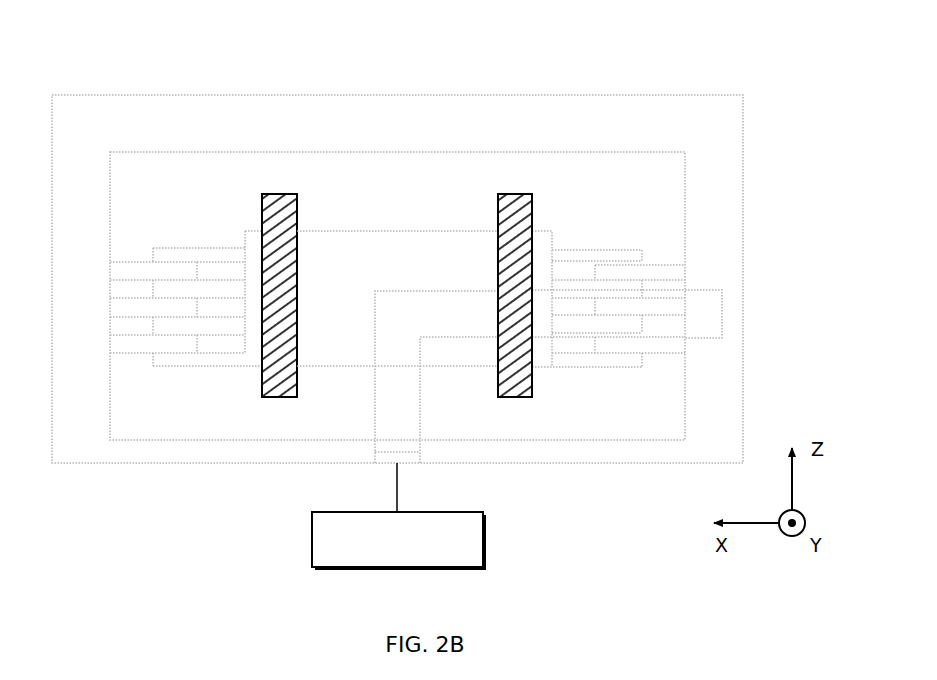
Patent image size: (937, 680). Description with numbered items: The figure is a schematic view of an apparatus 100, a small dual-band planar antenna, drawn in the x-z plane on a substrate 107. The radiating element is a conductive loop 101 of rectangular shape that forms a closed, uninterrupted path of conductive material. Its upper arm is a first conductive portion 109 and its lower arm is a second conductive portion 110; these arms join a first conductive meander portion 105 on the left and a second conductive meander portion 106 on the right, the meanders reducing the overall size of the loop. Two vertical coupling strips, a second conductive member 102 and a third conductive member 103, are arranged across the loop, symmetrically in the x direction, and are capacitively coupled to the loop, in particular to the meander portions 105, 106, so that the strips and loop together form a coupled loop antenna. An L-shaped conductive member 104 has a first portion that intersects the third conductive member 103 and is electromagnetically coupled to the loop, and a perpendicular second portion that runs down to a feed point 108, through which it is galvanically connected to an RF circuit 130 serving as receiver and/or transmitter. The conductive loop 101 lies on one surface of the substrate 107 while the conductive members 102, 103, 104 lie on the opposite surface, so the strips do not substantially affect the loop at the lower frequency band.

The apparatus 100 is at (115, 46).
The conductive loop 101 is at (636, 141).
The second conductive member 102 is at (297, 203).
The third conductive member 103 is at (532, 203).
The conductive member 104 is at (395, 298).
The first conductive meander portion 105 is at (137, 292).
The second conductive meander portion 106 is at (660, 283).
The substrate 107 is at (583, 105).
The feed point 108 is at (410, 458).
The first conductive portion 109 is at (420, 163).
The second conductive portion 110 is at (305, 376).
The RF circuit 130 is at (458, 512).